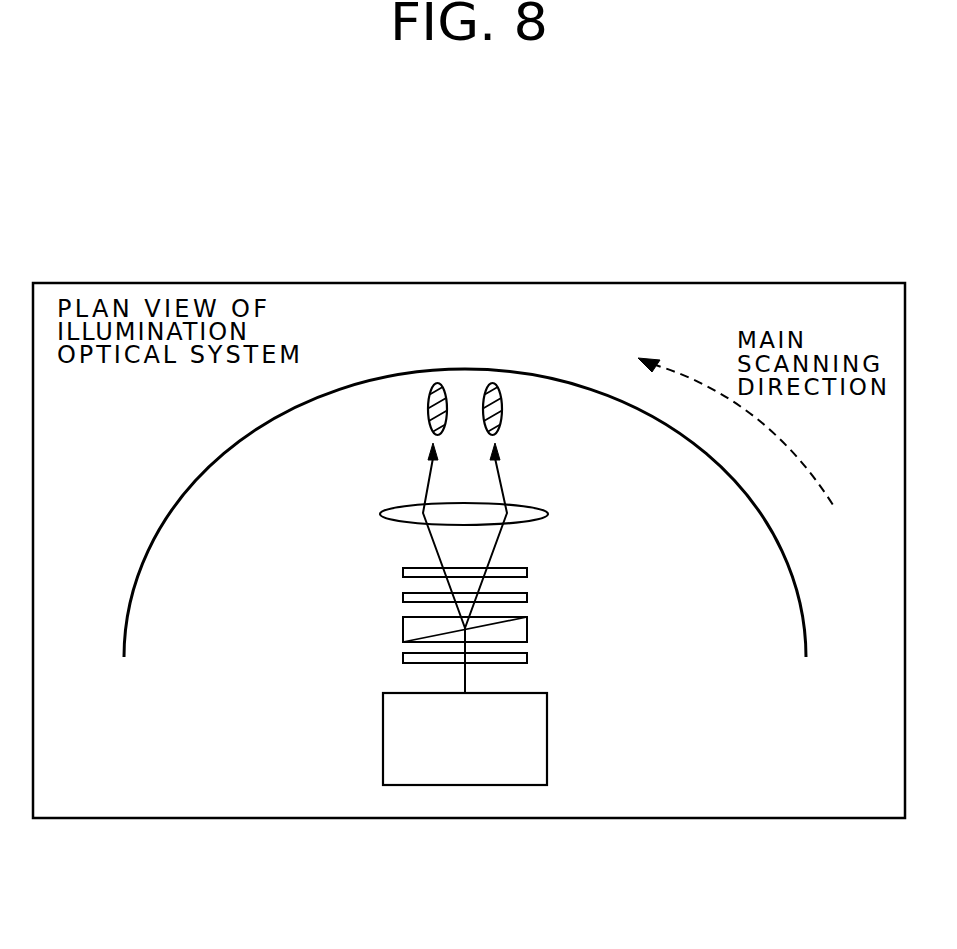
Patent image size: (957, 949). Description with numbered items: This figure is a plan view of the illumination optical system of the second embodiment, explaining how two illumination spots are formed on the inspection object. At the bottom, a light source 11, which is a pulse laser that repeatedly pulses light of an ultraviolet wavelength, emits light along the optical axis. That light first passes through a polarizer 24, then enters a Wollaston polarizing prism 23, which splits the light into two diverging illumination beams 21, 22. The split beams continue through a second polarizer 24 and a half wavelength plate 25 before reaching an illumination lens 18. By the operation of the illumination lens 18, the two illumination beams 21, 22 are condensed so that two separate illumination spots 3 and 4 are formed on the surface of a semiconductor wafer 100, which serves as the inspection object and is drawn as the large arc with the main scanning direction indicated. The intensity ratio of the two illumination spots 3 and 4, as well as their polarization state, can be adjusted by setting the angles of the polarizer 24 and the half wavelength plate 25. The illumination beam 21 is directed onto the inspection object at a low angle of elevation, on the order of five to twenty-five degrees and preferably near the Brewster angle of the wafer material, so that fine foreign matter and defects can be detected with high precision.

The illumination spot 3 is at (437, 383).
The illumination spot 4 is at (493, 383).
The semiconductor wafer 100 is at (305, 395).
The illumination lens 18 is at (380, 513).
The illumination beam 21 is at (420, 536).
The illumination beam 22 is at (507, 536).
The Wollaston polarizing prism 23 is at (527, 628).
The polarizer 24 is at (527, 597).
The ½ wavelength plate 25 is at (527, 572).
The light source 11 is at (547, 723).